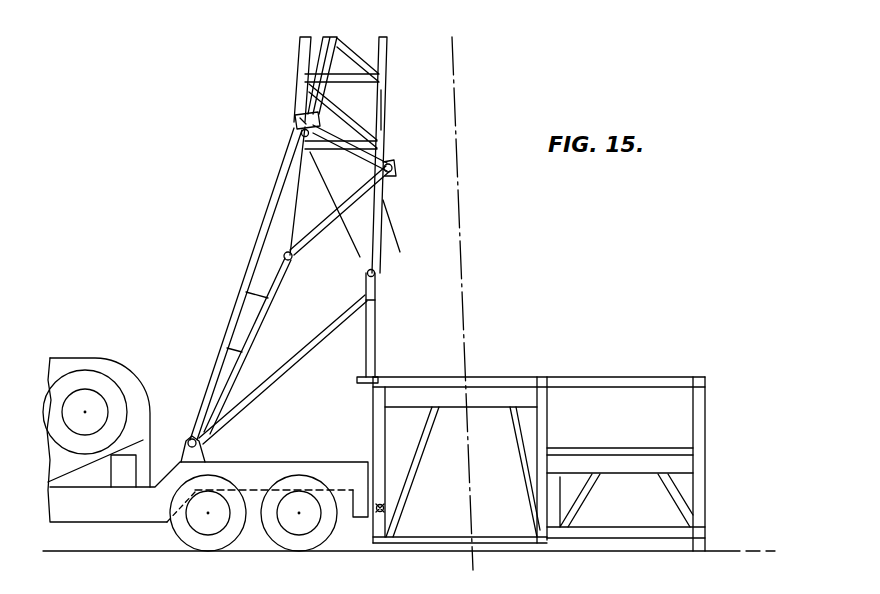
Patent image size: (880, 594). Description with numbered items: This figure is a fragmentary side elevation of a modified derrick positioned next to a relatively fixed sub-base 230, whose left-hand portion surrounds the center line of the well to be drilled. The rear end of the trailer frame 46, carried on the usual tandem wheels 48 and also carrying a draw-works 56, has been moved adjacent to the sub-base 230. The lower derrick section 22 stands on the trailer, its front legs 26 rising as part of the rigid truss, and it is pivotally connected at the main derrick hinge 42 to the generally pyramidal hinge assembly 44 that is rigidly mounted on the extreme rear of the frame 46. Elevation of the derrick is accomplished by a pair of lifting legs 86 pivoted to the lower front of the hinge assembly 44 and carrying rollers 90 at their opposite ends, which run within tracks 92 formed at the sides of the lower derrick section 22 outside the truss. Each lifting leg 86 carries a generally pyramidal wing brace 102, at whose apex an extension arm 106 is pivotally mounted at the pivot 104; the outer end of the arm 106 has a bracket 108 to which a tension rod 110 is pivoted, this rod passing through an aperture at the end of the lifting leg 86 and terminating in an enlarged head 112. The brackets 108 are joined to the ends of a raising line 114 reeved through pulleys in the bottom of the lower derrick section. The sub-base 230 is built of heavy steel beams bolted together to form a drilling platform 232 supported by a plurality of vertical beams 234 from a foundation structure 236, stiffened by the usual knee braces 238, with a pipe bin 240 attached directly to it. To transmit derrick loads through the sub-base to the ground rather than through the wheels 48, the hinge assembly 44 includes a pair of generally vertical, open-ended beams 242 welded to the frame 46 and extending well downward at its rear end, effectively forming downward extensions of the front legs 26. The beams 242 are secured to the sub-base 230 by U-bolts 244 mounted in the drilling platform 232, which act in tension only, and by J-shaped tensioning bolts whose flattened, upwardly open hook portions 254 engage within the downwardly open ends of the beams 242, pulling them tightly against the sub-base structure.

The lower derrick section 22 is at (392, 45).
The front legs 26 is at (378, 113).
The main derrick hinge 42 is at (376, 270).
The hinge assembly 44 is at (297, 354).
The trailer frame 46 is at (244, 469).
The tandem wheels 48 is at (222, 538).
The draw-works 56 is at (104, 383).
The lifting legs 86 is at (247, 280).
The rollers 90 is at (300, 133).
The tracks 92 is at (332, 51).
The wing brace 102 is at (257, 312).
The pivotal mounting 104 is at (292, 259).
The extension arm 106 is at (314, 228).
The bracket 108 is at (393, 165).
The tension rod 110 is at (344, 137).
The enlarged head 112 is at (290, 126).
The raising line 114 is at (388, 204).
The sub-base 230 is at (540, 358).
The drilling platform 232 is at (412, 383).
The vertical beams 234 is at (549, 421).
The foundation structure 236 is at (503, 543).
The knee braces 238 is at (423, 444).
The pipe bin 240 is at (694, 467).
The open-ended beams 242 is at (377, 312).
The U-bolts 244 is at (357, 383).
The hook portions 254 is at (374, 517).